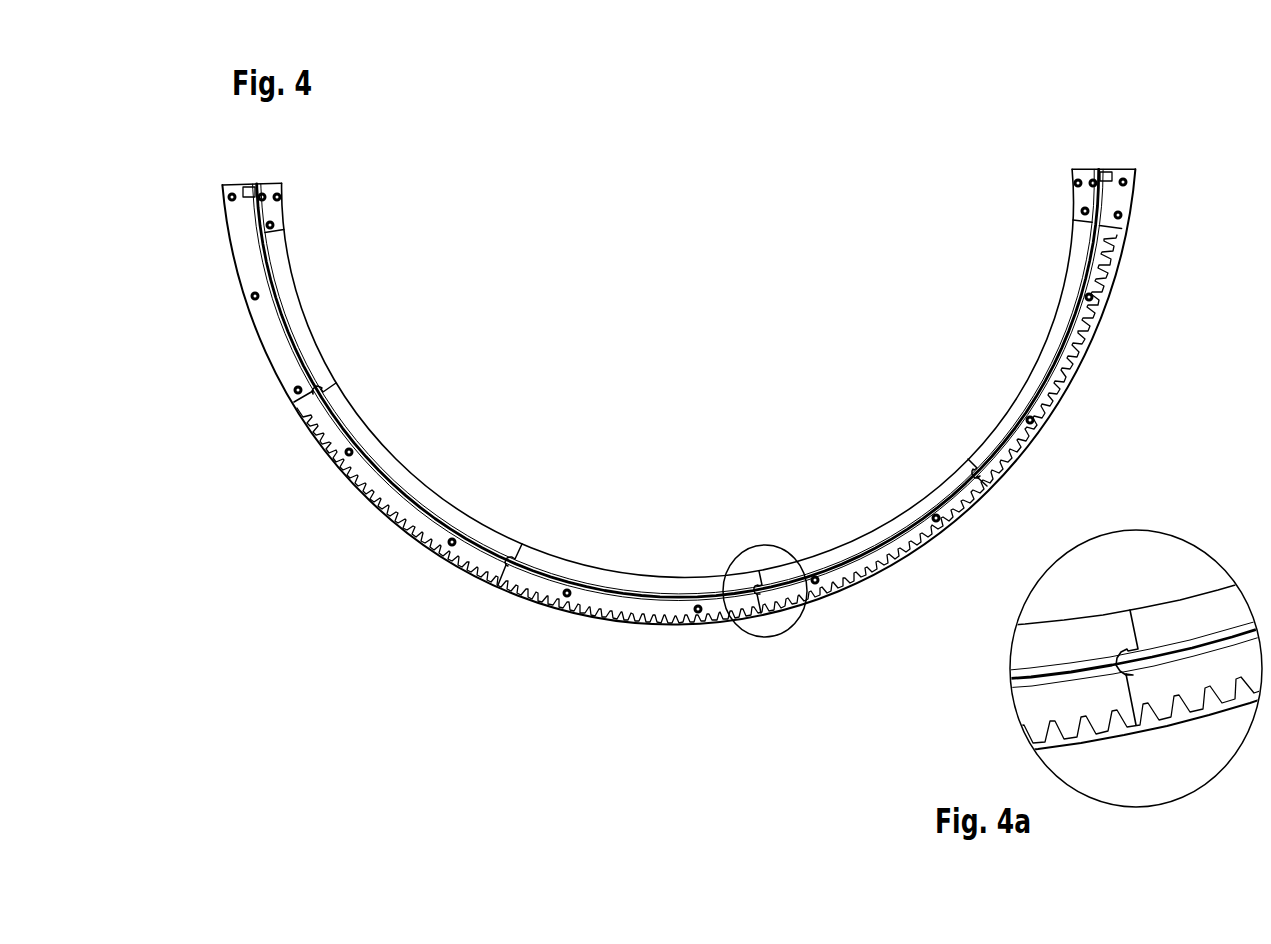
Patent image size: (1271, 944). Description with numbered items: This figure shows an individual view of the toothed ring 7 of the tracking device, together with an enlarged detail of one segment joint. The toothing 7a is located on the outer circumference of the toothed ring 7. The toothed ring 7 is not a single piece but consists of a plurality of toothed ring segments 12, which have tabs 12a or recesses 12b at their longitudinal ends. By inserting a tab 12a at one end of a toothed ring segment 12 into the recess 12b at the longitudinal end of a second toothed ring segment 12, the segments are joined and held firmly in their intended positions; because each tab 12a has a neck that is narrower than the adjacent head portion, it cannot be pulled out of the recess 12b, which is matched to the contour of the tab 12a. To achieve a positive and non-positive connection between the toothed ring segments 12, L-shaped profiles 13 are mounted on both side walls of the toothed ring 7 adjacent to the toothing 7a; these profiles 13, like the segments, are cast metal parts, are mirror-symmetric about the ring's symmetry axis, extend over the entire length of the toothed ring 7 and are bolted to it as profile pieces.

In FIG. 4, the toothed ring 7 is at (738, 524).
In FIG. 4, the toothing 7a is at (1035, 442).
In FIG. 4, the toothed ring segment 12 is at (444, 470).
In FIG. 4A, the toothed ring segment 12 is at (1040, 601).
In FIG. 4, the tab 12a is at (640, 526).
In FIG. 4A, the tab 12a is at (1145, 676).
In FIG. 4, the recess 12b is at (762, 580).
In FIG. 4A, the recess 12b is at (1150, 645).
In FIG. 4, the L-shaped profile 13 is at (300, 317).